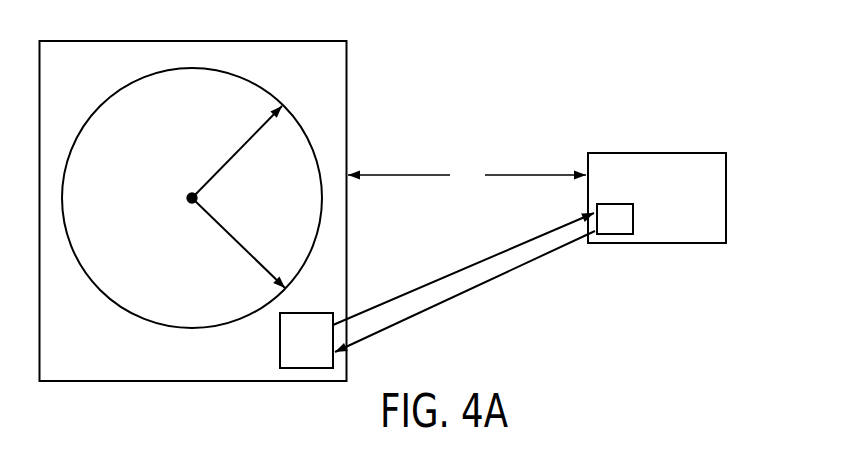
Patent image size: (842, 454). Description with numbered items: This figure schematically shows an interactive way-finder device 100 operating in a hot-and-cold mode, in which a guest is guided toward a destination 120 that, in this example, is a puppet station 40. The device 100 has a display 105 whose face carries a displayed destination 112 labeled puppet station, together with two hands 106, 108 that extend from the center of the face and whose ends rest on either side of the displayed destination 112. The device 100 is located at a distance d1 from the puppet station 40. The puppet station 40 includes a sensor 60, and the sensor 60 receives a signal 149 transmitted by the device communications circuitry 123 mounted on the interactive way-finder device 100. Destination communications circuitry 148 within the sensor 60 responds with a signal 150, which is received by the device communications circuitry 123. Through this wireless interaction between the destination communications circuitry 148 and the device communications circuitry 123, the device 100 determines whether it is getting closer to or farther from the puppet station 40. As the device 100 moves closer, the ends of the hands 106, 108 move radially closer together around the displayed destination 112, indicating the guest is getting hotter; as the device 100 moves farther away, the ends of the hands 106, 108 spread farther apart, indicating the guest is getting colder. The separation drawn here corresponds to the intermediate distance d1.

The interactive way-finder device 100 is at (258, 32).
The display 105 is at (246, 71).
The displayed destination 112 is at (282, 165).
The hand 108 is at (233, 155).
The hand 106 is at (232, 242).
The device communications circuitry 123 is at (280, 339).
The signal 149 is at (458, 272).
The signal 150 is at (470, 283).
The distance d1 is at (467, 175).
The puppet station 40 is at (692, 244).
The destination 120 is at (657, 153).
The sensor 60 is at (620, 204).
The destination communications circuitry 148 is at (618, 228).